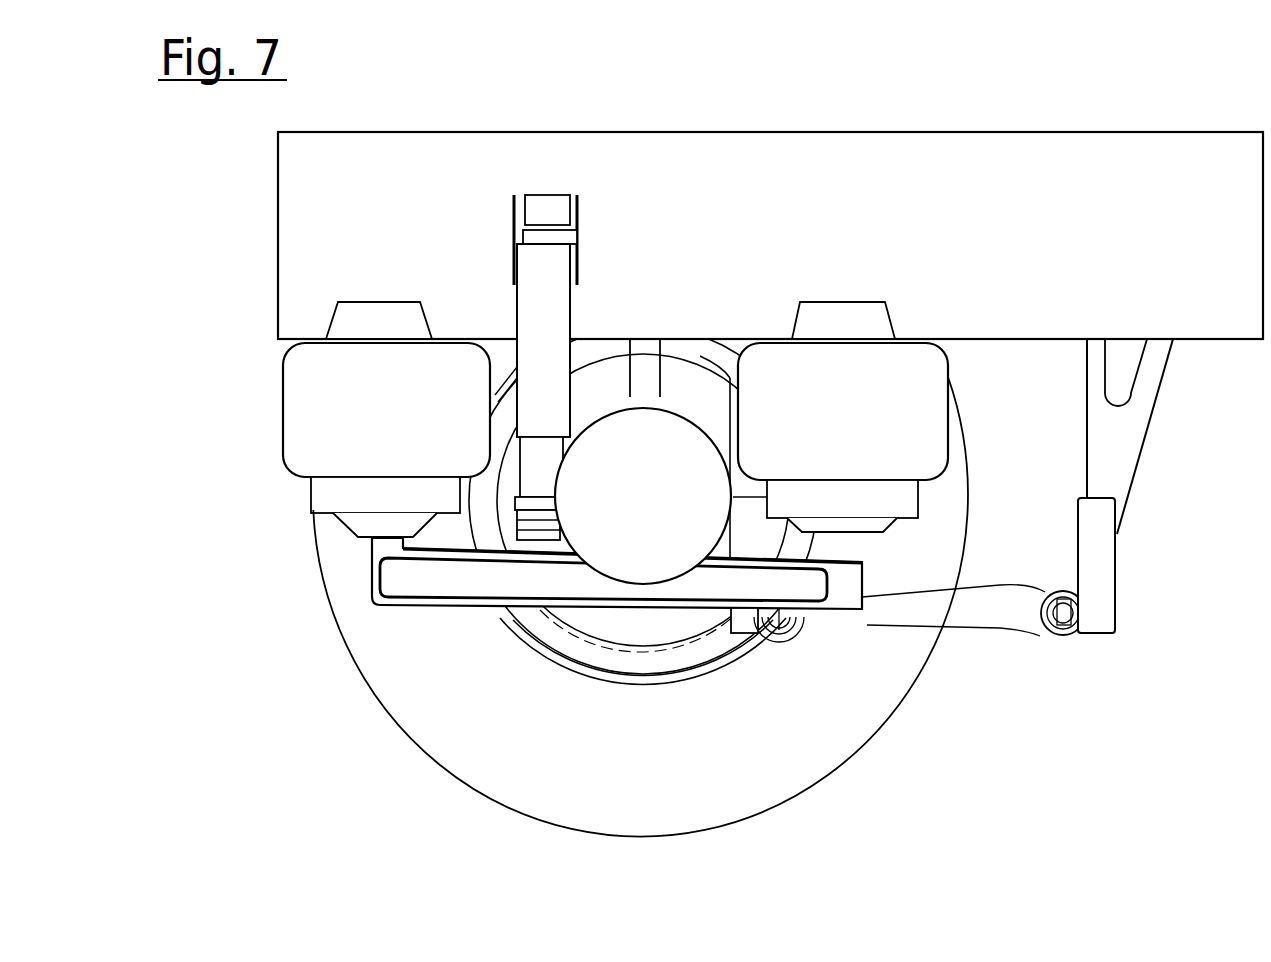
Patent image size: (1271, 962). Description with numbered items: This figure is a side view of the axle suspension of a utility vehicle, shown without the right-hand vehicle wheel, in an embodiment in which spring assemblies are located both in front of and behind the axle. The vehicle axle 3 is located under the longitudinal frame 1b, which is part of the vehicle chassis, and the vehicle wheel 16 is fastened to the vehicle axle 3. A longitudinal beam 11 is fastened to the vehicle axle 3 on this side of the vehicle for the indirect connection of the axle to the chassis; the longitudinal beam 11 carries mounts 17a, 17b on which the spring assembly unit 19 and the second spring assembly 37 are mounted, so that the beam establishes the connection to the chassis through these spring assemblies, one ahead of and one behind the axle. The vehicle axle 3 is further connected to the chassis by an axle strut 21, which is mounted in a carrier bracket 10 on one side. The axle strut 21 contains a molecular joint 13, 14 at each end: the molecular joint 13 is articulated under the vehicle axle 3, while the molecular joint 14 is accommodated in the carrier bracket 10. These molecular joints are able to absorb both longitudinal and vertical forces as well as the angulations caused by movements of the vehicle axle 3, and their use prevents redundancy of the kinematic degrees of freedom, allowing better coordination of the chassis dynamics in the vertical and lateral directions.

The longitudinal frame 1b is at (982, 222).
The vehicle axle 3 is at (640, 497).
The carrier bracket 10 is at (1108, 450).
The longitudinal beam 11 is at (710, 583).
The molecular joint 13 is at (785, 627).
The molecular joint 14 is at (1077, 650).
The vehicle wheel 16 is at (510, 703).
The mount 17a is at (848, 560).
The mount 17b is at (583, 553).
The spring assembly unit 19 is at (838, 390).
The axle strut 21 is at (965, 608).
The spring assembly 37 is at (379, 418).